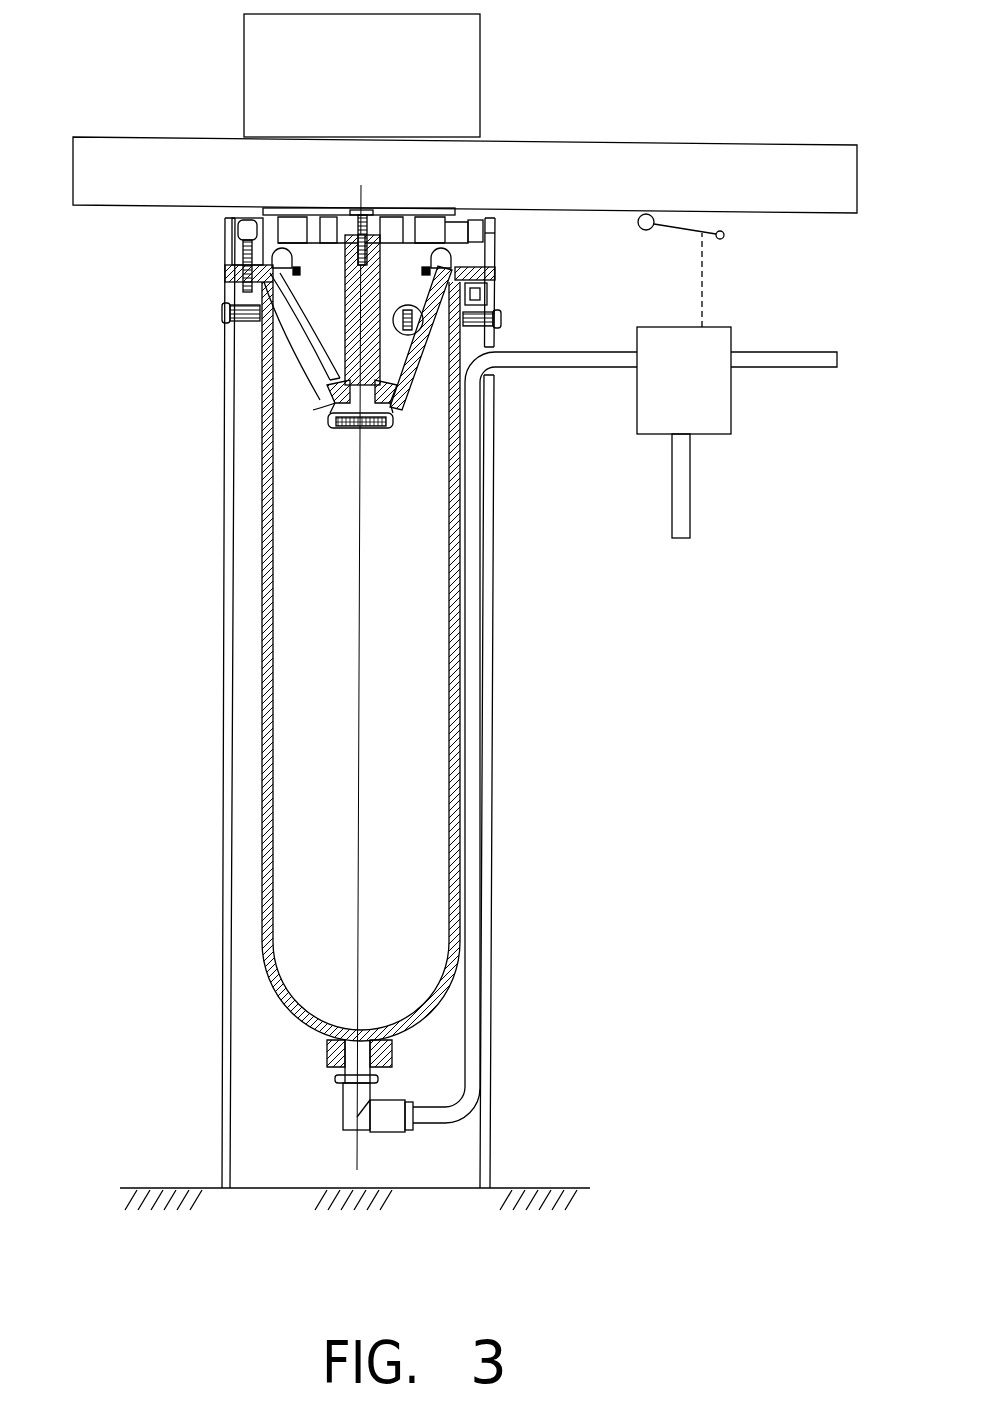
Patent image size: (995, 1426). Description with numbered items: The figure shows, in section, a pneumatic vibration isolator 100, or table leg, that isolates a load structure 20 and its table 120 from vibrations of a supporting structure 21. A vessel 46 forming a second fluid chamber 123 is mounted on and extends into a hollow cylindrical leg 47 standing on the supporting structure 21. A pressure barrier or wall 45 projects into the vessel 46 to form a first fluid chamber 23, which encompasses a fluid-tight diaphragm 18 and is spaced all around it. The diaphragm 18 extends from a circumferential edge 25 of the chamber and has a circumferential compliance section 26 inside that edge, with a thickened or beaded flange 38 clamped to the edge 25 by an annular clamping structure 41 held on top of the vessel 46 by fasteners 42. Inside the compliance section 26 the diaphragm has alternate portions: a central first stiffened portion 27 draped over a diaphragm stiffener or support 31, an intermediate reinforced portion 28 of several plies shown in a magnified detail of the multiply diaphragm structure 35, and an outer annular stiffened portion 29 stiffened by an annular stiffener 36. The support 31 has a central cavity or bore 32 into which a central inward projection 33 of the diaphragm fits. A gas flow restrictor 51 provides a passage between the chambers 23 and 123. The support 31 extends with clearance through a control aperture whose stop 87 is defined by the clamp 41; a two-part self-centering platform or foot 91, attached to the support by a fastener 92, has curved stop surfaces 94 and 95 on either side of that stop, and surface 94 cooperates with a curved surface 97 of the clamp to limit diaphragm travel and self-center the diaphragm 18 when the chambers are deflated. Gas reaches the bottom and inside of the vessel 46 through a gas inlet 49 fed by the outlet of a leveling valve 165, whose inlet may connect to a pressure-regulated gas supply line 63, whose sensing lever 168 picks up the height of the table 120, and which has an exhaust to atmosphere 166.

The load structure 20 is at (452, 114).
The table 120 is at (630, 197).
The vibration isolator 100 is at (503, 637).
The second fluid chamber 123 is at (418, 659).
The vessel 46 is at (262, 630).
The hollow cylindrical leg 47 is at (224, 791).
The supporting structure 21 is at (460, 1190).
The pressure-regulated gas supply line 63 is at (770, 370).
The gas inlet 49 is at (567, 370).
The leveling valve 165 is at (710, 387).
The exhaust to atmosphere 166 is at (690, 487).
The sensing lever 168 is at (706, 236).
The curved surface 97 is at (265, 212).
The stop 87 is at (307, 228).
The curved stop surface 95 is at (325, 218).
The self-centering platform or foot 91 is at (392, 217).
The curved stop surface 94 is at (442, 216).
The fastener 92 is at (355, 209).
The first stiffened diaphragm portion 27 is at (313, 412).
The central inward projection 33 is at (400, 415).
The gas flow restrictor 51 is at (353, 432).
The reinforced diaphragm portion 28 is at (310, 403).
The diaphragm stiffener or support 31 is at (318, 417).
The wall or pressure barrier 45 is at (315, 405).
The fluid-tight diaphragm 18 is at (308, 325).
The thickened or beaded flange 38 is at (473, 257).
The central cavity or bore 32 is at (500, 318).
The multiply diaphragm structure 35 is at (417, 313).
The annular stiffener 36 is at (225, 272).
The fasteners 42 is at (233, 213).
The circumferential edge 25 is at (237, 240).
The first fluid chamber 23 is at (225, 307).
The circumferential compliance section 26 is at (497, 229).
The annular stiffened diaphragm portion 29 is at (497, 275).
The annular clamping structure 41 is at (490, 210).